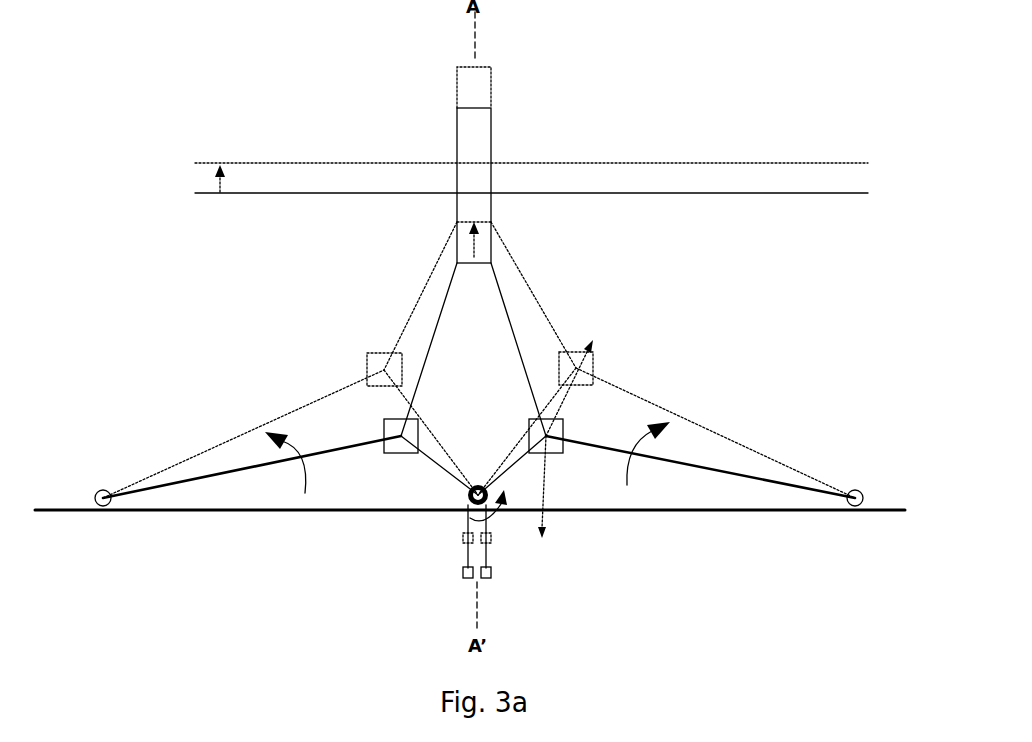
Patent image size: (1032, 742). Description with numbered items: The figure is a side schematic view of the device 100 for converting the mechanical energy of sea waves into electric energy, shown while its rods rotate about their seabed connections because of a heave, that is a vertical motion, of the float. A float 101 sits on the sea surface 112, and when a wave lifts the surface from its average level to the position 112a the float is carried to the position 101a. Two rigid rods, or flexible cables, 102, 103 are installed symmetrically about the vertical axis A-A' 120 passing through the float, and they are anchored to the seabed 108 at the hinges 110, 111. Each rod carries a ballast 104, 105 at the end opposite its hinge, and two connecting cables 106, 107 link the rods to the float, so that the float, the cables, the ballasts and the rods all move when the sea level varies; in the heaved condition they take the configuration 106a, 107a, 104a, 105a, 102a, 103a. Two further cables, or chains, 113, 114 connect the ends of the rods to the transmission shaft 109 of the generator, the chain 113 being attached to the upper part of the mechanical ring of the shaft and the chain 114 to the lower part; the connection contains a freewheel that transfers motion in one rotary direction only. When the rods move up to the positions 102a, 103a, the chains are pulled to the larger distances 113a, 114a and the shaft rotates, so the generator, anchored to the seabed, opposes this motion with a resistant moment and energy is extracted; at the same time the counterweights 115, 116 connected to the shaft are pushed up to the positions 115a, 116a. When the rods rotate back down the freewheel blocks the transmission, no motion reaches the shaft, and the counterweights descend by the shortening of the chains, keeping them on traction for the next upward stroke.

The device for conversion of mechanical energy from sea waves to electric energy 100 is at (196, 312).
The float 101 is at (495, 251).
The float position 101a is at (495, 97).
The rod 102 is at (150, 487).
The rod position 102a is at (222, 441).
The rod 103 is at (810, 485).
The rod position 103a is at (735, 440).
The ballast 104 is at (387, 420).
The ballast position 104a is at (367, 363).
The ballast 105 is at (567, 425).
The ballast position 105a is at (595, 363).
The connecting cable 106 is at (438, 323).
The connecting cable position 106a is at (398, 332).
The connecting cable 107 is at (513, 340).
The connecting cable position 107a is at (558, 332).
The seabed 108 is at (75, 508).
The transmission shaft 109 is at (450, 497).
The hinge 110 is at (97, 490).
The hinge 111 is at (860, 487).
The sea surface 112 is at (715, 190).
The sea surface position 112a is at (678, 157).
The chain 113 is at (427, 447).
The chain distance 113a is at (465, 460).
The chain 114 is at (510, 480).
The chain distance 114a is at (540, 458).
The counterweight 115 is at (462, 572).
The counterweight position 115a is at (462, 538).
The counterweight 116 is at (492, 572).
The counterweight position 116a is at (493, 538).
The axis A-A' 120 is at (470, 25).